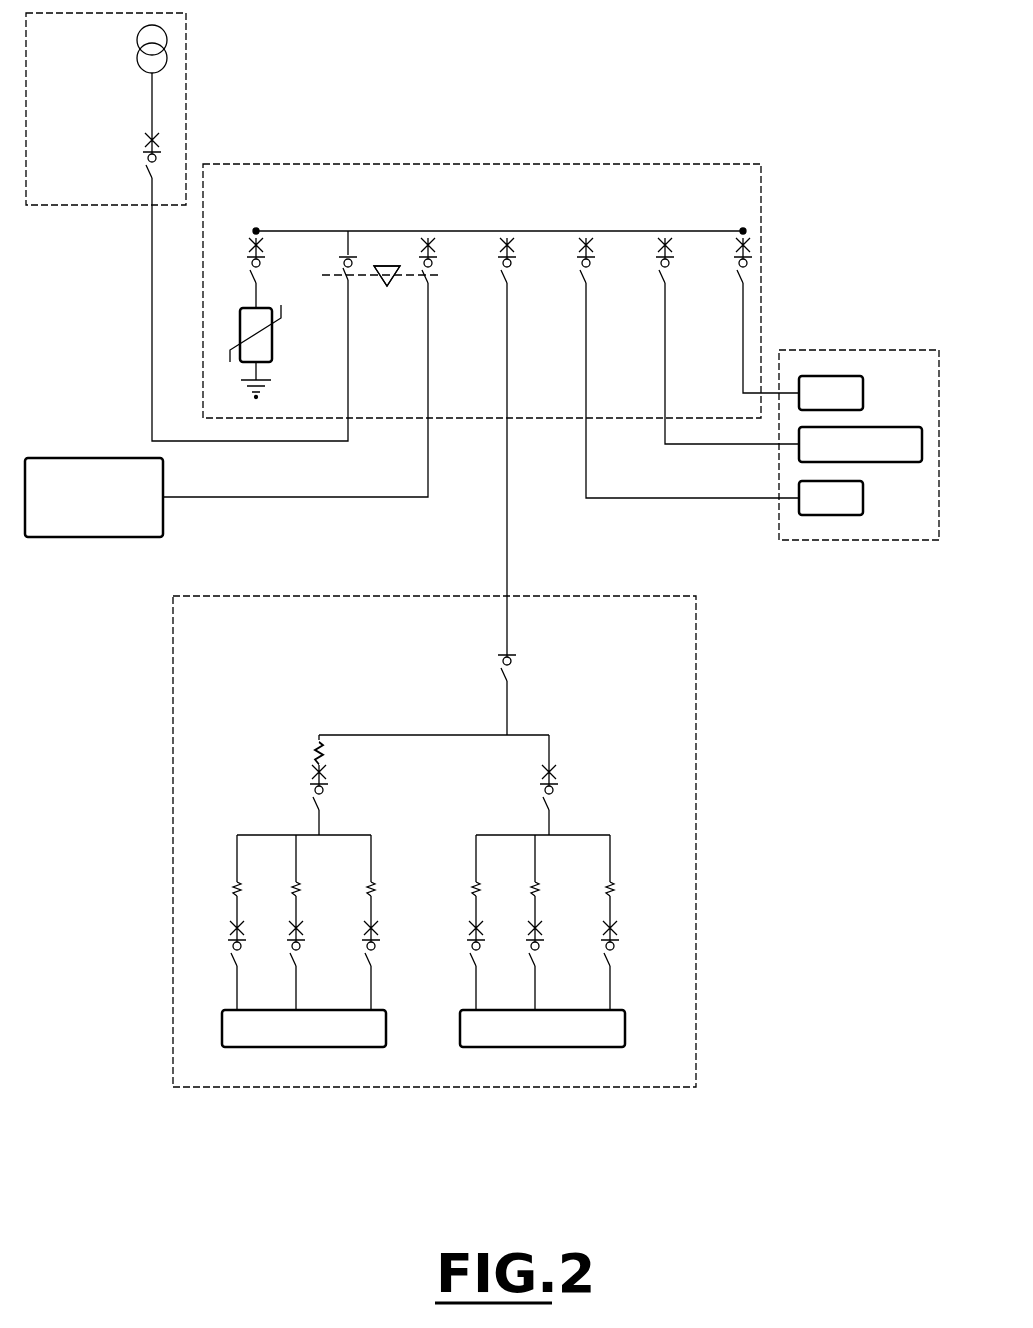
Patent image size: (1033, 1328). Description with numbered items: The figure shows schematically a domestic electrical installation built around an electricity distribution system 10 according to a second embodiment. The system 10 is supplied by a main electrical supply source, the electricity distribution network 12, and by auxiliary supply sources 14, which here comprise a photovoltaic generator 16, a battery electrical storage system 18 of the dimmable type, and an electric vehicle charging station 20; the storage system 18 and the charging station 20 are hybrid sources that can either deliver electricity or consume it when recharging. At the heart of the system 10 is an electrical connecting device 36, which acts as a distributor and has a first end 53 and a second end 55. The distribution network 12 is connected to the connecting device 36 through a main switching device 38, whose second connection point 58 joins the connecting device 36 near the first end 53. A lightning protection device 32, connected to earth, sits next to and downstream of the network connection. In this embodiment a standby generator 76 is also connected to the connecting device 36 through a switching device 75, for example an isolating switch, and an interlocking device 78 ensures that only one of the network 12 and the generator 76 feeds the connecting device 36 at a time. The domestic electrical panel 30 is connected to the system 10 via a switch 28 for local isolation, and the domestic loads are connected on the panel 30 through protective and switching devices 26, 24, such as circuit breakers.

The electricity distribution system 10 is at (616, 162).
The electricity distribution network 12 is at (187, 32).
The auxiliary supply source 14 is at (896, 350).
The photovoltaic generator 16 is at (831, 393).
The battery electrical storage system 18 is at (860, 444).
The electric vehicle charging station 20 is at (831, 498).
The protective and switching device 24 is at (207, 925).
The protective and switching device 26 is at (291, 763).
The switch 28 is at (527, 667).
The domestic electrical panel 30 is at (702, 710).
The lightning protection device 32 is at (238, 315).
The electrical connecting device 36 is at (387, 226).
The main switching device 38 is at (335, 288).
The first end 53 is at (242, 231).
The second end 55 is at (760, 231).
The second connection point 58 is at (345, 226).
The switching device 75 is at (443, 274).
The standby generator 76 is at (94, 497).
The interlocking device 78 is at (388, 294).